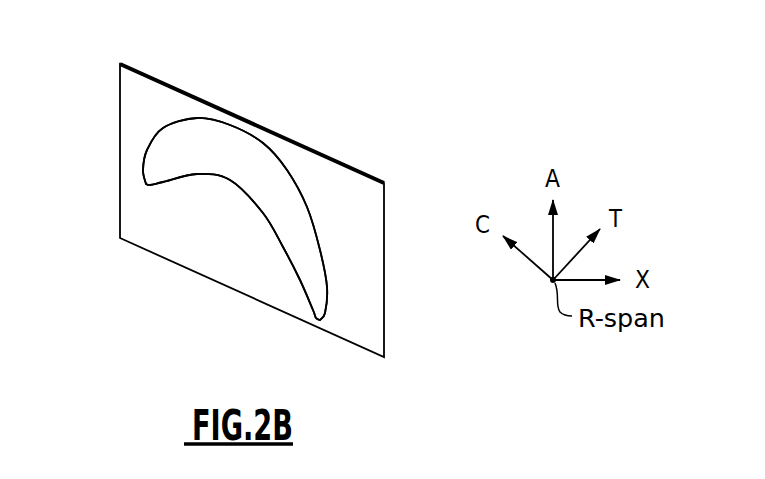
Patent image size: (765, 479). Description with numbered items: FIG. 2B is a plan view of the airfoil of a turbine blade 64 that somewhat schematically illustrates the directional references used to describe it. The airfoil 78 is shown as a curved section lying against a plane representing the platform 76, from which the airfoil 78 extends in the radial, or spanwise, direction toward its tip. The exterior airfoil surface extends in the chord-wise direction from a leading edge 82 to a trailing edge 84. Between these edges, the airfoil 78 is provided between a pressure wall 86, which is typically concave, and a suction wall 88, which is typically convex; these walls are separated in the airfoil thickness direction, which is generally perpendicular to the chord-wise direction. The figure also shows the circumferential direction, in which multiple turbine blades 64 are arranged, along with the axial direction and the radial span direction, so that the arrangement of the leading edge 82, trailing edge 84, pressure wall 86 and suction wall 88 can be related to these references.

The turbine blade 64 is at (349, 114).
The platform 76 is at (178, 86).
The airfoil 78 is at (150, 185).
The leading edge 82 is at (148, 182).
The trailing edge 84 is at (320, 322).
The pressure wall 86 is at (243, 195).
The suction wall 88 is at (253, 133).